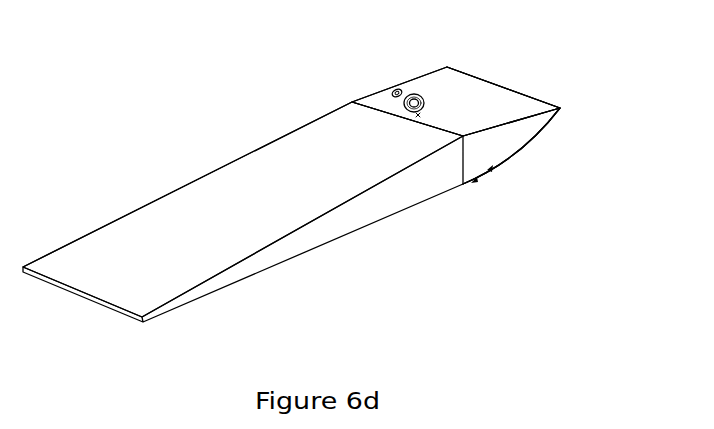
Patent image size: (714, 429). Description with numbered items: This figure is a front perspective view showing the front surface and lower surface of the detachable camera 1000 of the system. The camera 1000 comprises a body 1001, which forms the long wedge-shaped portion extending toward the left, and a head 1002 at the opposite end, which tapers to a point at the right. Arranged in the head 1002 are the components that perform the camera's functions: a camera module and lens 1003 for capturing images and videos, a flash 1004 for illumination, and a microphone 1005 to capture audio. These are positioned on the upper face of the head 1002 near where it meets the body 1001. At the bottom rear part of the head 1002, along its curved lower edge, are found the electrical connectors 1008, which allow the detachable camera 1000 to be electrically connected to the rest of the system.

The camera 1000 is at (227, 140).
The body 1001 is at (115, 242).
The head 1002 is at (527, 102).
The camera module and lens 1003 is at (414, 94).
The flash 1004 is at (383, 93).
The microphone 1005 is at (418, 117).
The electrical connectors 1008 is at (485, 177).